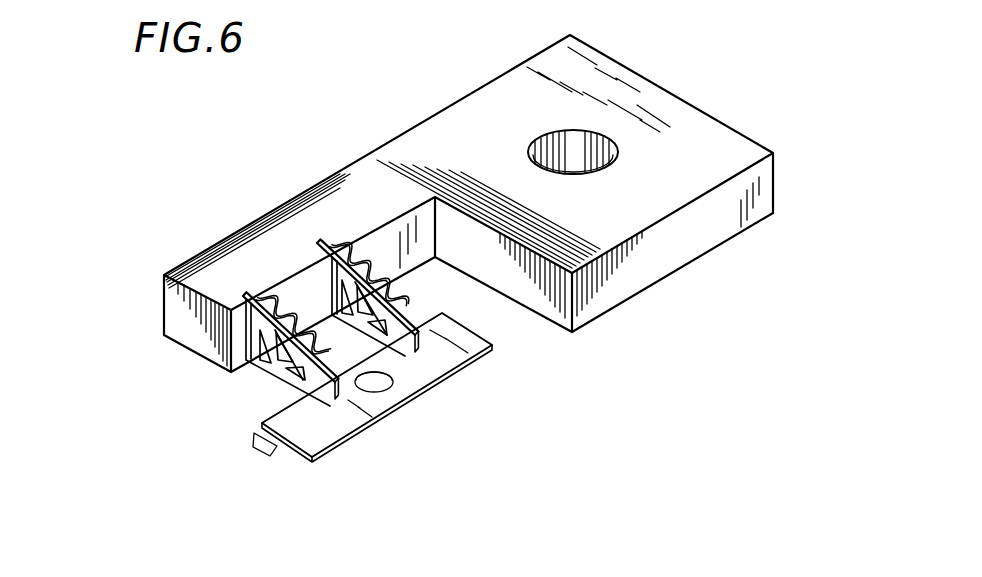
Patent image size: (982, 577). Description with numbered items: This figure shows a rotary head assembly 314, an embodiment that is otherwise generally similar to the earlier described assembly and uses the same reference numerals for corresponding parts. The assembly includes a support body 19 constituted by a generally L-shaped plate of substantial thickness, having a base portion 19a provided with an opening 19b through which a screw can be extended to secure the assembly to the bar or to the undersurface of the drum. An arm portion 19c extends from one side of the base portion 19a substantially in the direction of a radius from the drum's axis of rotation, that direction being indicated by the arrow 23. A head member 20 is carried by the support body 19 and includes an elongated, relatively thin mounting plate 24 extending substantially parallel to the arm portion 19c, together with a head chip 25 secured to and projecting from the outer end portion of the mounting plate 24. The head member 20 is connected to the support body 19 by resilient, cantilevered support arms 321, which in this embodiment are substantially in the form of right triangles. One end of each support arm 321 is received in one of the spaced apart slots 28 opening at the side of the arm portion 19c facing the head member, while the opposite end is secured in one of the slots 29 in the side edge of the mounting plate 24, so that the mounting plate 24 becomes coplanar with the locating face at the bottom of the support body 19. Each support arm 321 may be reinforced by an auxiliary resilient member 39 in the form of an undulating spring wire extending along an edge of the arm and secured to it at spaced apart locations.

The support body 19 is at (726, 118).
The base portion 19a is at (680, 200).
The opening 19b is at (593, 138).
The arm portion 19c is at (398, 165).
The rotary head assembly 314 is at (403, 113).
The slots 28 is at (338, 341).
The slots 29 is at (408, 356).
The auxiliary resilient member 39 is at (308, 311).
The resilient cantilevered support arms 321 is at (280, 378).
The mounting plate 24 is at (480, 362).
The head chip 25 is at (272, 457).
The head member 20 is at (307, 467).
The arrow 23 is at (157, 462).